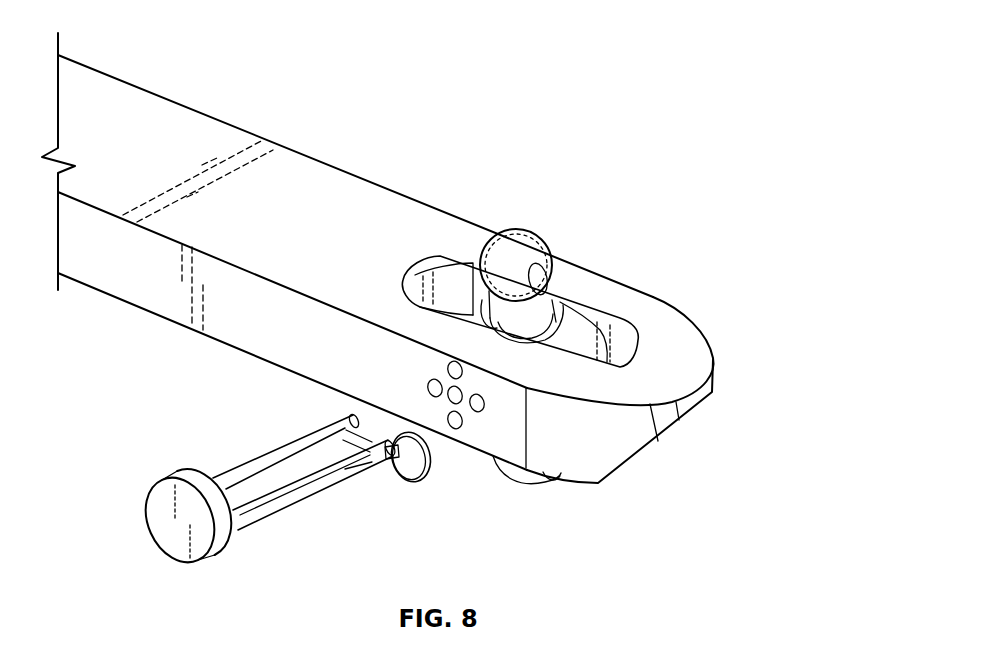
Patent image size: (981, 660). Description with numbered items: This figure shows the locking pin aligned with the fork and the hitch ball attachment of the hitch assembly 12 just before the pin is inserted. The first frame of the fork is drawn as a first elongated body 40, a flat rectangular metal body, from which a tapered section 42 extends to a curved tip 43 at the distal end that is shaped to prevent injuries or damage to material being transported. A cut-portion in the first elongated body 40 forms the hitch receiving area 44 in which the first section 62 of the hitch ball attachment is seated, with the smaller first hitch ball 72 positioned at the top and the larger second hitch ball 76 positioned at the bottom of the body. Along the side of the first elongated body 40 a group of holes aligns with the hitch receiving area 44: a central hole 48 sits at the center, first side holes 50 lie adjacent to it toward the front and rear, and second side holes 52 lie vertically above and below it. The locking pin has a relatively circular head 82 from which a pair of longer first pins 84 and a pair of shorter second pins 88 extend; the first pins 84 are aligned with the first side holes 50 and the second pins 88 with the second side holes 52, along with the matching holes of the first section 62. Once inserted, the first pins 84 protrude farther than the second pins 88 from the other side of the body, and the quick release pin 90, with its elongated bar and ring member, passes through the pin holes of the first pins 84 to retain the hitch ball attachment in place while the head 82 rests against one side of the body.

The hitch assembly 12 is at (788, 57).
The first elongated body 40 is at (269, 178).
The tapered section 42 is at (745, 352).
The tip 43 is at (812, 449).
The hitch receiving area 44 is at (607, 330).
The central hole 48 is at (455, 404).
The first side holes 50 is at (477, 412).
The second side holes 52 is at (450, 371).
The first section 62 is at (567, 320).
The first hitch ball 72 is at (516, 240).
The second hitch ball 76 is at (533, 477).
The head 82 is at (165, 520).
The first pins 84 is at (272, 497).
The second pins 88 is at (246, 468).
The quick release pin 90 is at (403, 481).